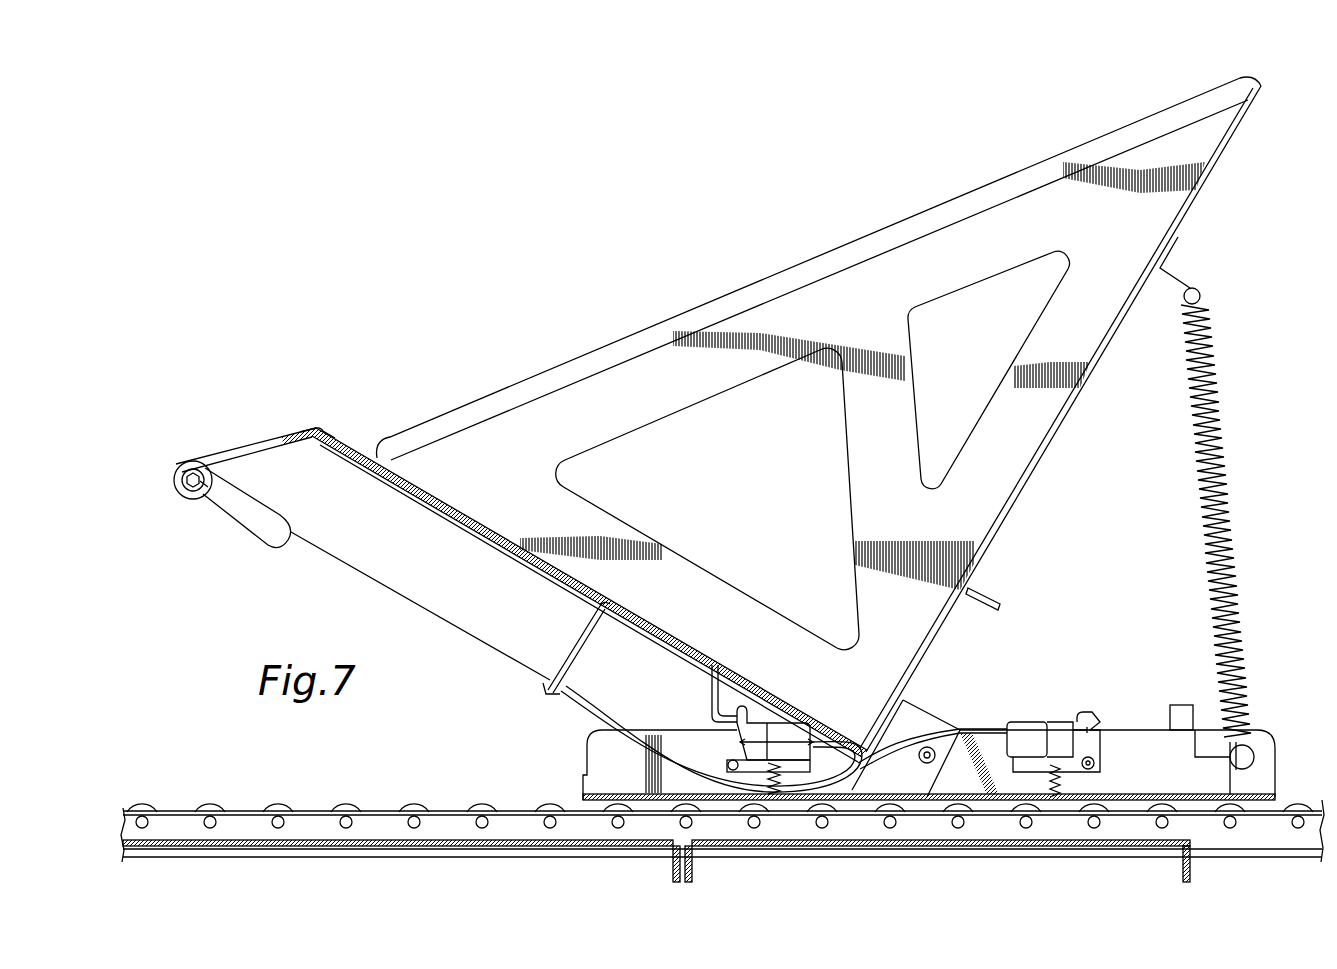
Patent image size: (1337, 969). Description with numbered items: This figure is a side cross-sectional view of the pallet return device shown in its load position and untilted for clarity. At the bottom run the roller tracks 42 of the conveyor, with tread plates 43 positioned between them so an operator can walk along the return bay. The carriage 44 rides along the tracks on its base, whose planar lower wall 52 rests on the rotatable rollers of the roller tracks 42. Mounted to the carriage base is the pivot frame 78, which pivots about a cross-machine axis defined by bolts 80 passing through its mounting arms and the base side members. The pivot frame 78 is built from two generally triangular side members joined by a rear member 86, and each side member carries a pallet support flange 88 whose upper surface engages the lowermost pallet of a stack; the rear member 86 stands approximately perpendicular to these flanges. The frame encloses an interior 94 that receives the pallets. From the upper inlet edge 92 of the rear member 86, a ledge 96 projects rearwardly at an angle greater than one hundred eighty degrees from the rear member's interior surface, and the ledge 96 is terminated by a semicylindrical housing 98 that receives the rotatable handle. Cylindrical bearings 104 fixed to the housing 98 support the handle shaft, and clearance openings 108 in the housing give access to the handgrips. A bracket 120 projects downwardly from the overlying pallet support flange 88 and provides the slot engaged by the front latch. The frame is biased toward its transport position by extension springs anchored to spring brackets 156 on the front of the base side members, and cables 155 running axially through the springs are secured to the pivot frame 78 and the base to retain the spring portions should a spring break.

The roller tracks 42 is at (306, 806).
The tread plates 43 is at (436, 840).
The carriage 44 is at (776, 272).
The planar lower wall 52 is at (630, 768).
The pivot frame 78 is at (507, 387).
The bolts 80 is at (921, 757).
The rear member 86 is at (340, 441).
The pallet support flange 88 is at (1050, 433).
The upper inlet edge 92 is at (314, 420).
The interior 94 is at (483, 519).
The ledge 96 is at (243, 437).
The semicylindrical housing 98 is at (178, 485).
The cylindrical bearings 104 is at (212, 471).
The clearance openings 108 is at (196, 462).
The bracket 120 is at (1003, 604).
The cables 155 is at (1228, 470).
The spring brackets 156 is at (1250, 776).